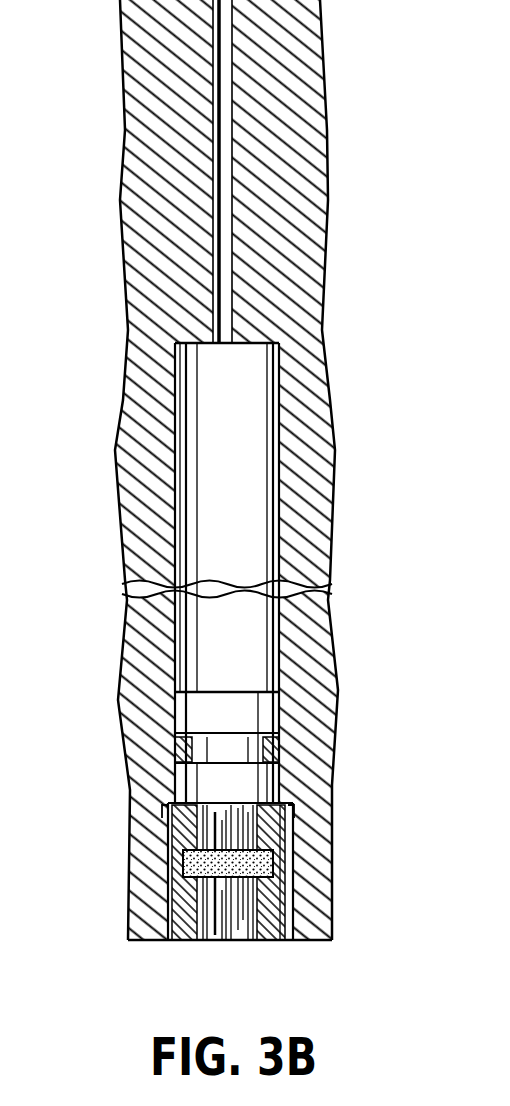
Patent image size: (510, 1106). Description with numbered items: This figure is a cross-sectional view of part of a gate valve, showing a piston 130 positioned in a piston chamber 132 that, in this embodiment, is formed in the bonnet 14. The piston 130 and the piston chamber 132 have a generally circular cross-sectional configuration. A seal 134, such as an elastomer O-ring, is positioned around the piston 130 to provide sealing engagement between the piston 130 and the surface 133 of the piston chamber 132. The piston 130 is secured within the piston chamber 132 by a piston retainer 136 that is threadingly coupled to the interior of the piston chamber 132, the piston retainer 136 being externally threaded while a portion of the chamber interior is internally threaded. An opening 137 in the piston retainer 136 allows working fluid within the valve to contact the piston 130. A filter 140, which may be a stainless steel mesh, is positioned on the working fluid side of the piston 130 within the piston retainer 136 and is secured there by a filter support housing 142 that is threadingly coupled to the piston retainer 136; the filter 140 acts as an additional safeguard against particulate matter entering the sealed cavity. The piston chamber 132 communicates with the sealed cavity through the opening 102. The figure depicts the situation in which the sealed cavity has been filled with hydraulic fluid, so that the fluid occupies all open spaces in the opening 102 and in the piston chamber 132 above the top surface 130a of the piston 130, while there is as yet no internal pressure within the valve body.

The bonnet 14 is at (300, 152).
The opening 102 is at (210, 195).
The piston 130 is at (175, 718).
The top surface 130a is at (257, 690).
The piston chamber 132 is at (245, 410).
The surface 133 is at (177, 403).
The seal 134 is at (280, 748).
The piston retainer 136 is at (128, 776).
The opening 137 is at (255, 827).
The filter 140 is at (297, 868).
The filter support housing 142 is at (190, 940).